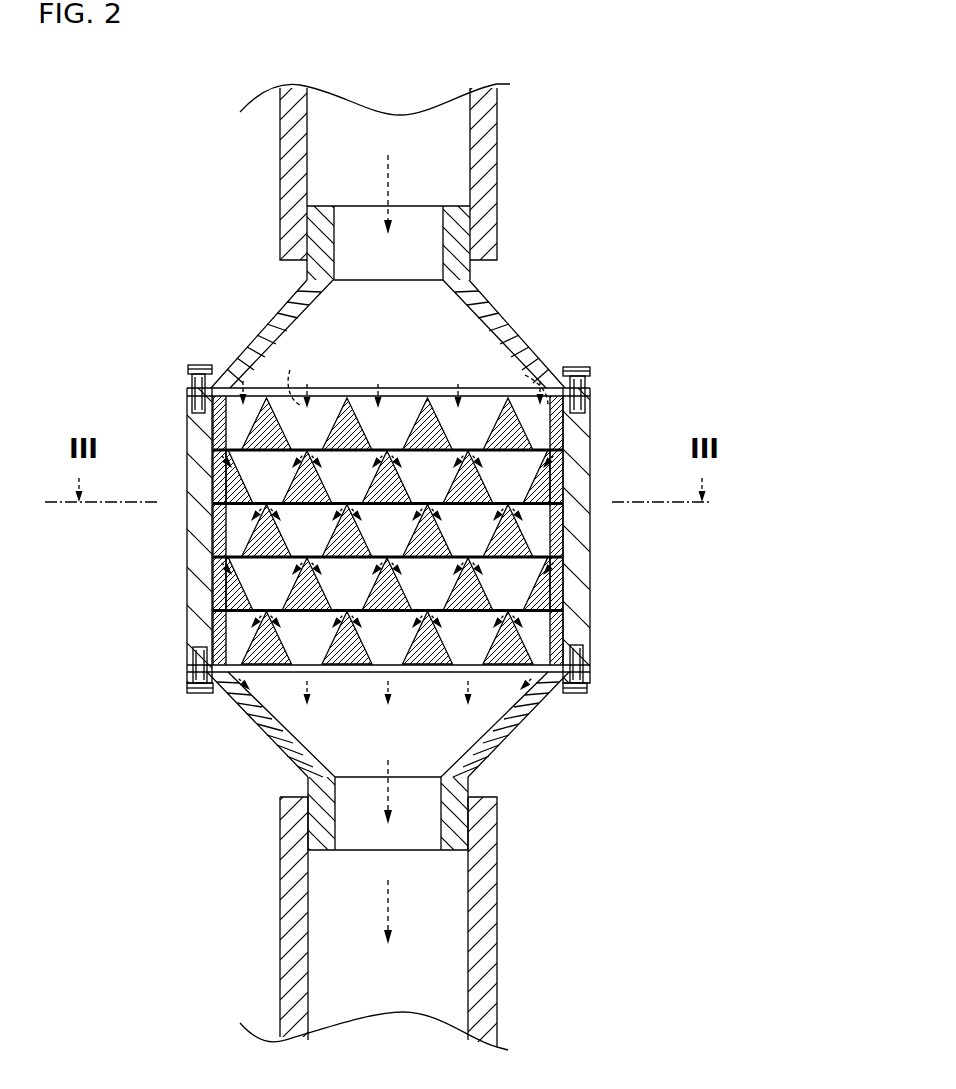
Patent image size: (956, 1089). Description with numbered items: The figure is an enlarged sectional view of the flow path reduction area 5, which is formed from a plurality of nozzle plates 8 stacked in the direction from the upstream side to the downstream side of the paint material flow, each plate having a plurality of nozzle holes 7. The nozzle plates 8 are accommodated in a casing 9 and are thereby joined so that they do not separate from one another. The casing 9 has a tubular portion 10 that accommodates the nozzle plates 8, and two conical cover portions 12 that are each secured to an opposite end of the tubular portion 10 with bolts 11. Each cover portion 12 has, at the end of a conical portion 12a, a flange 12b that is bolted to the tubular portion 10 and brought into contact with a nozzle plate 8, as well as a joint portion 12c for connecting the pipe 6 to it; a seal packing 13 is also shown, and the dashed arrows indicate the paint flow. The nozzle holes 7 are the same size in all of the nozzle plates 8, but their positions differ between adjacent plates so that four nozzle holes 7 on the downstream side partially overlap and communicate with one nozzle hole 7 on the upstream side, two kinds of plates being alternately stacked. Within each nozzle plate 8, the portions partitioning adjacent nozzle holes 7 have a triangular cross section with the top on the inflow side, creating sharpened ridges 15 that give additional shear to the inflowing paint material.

The flow path reduction area 5 is at (394, 362).
The pipe 6 is at (482, 140).
The nozzle holes 7 is at (340, 400).
The nozzle plates 8 is at (212, 480).
The casing 9 is at (150, 533).
The tubular portion 10 is at (592, 583).
The bolts 11 is at (588, 368).
The conical cover portions 12 is at (522, 312).
The conical portion 12a is at (277, 326).
The flange 12b is at (320, 232).
The joint portion 12c is at (187, 382).
The seal packing 13 is at (187, 390).
The sharpened ridges 15 is at (505, 393).